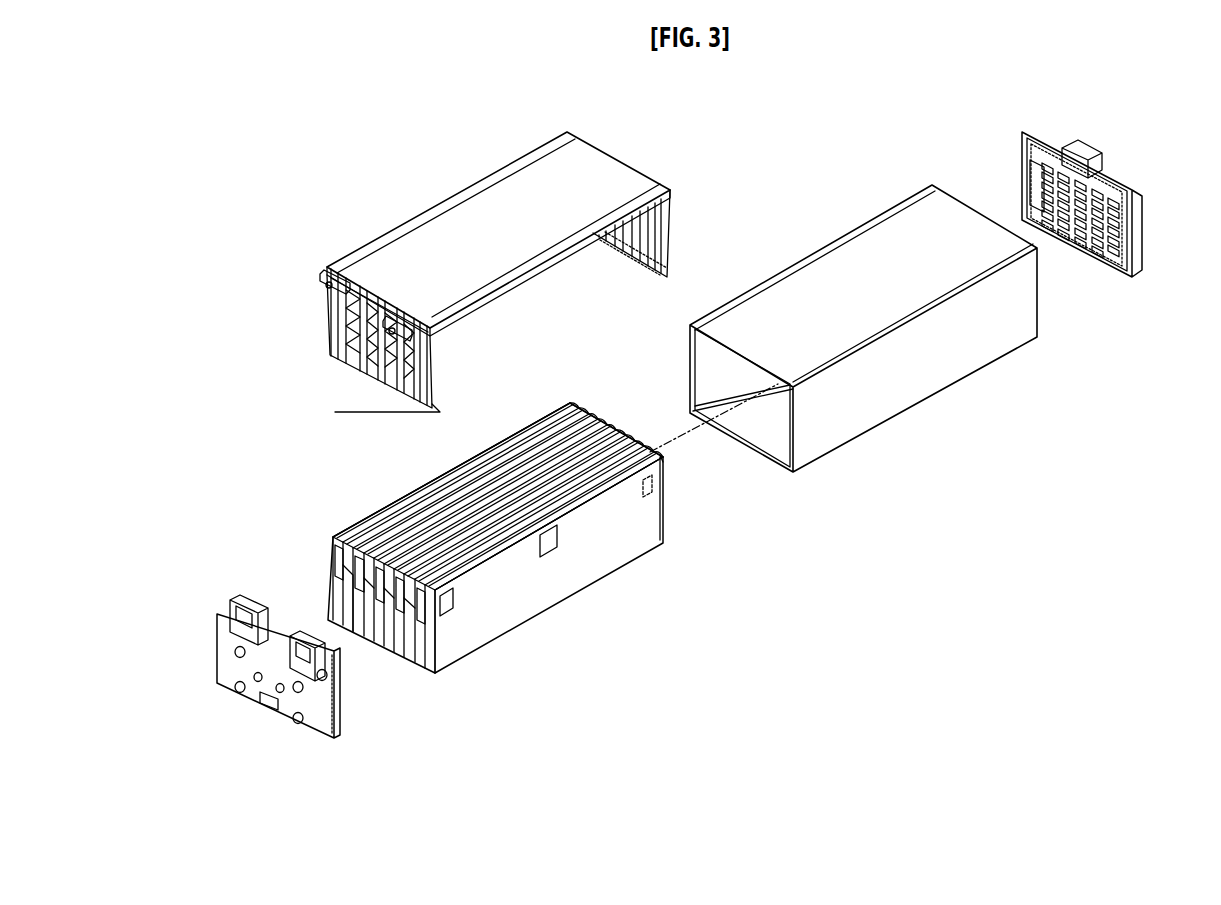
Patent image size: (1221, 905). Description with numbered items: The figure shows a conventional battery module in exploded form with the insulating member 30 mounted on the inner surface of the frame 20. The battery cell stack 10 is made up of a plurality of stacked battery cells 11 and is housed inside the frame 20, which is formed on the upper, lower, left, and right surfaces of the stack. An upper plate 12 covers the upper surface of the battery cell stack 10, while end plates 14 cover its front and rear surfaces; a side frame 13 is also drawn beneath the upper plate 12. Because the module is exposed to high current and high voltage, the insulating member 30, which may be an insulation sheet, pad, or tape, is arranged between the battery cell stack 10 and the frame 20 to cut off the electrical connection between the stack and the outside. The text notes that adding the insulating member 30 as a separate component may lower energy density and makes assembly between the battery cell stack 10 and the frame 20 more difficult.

The battery cell stack 10 is at (335, 518).
The battery cells 11 is at (495, 615).
The upper plate 12 is at (402, 237).
The side frame 13 is at (335, 332).
The end plate 14 is at (1082, 160).
The frame 20 is at (818, 277).
The insulating member 30 is at (743, 363).